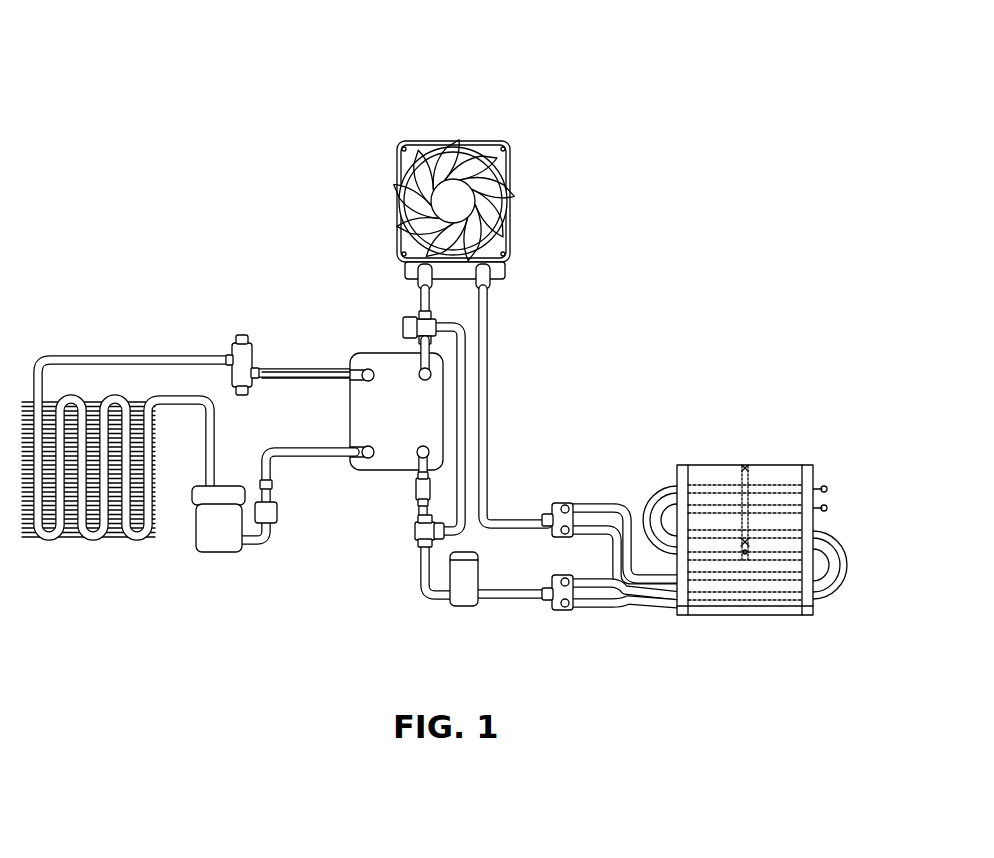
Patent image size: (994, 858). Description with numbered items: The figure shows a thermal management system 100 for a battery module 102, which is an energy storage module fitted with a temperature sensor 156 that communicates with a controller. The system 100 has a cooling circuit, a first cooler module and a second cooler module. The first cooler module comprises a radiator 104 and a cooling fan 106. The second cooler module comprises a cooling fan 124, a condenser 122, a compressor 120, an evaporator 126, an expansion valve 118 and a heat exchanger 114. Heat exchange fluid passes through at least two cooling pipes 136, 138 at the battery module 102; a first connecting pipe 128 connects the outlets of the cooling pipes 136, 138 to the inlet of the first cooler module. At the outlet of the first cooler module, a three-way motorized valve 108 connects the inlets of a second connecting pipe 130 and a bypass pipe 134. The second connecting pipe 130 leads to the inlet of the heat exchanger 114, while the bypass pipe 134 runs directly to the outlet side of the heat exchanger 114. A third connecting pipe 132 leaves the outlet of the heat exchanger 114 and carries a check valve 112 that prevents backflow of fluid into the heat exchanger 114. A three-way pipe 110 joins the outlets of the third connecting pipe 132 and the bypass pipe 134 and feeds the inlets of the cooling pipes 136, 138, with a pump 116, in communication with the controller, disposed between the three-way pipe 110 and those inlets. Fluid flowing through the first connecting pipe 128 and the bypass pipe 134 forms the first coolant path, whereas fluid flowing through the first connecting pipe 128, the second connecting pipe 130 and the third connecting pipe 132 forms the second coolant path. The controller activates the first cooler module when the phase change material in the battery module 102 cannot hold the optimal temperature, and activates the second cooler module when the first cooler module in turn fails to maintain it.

The thermal management system 100 is at (146, 38).
The battery module 102 is at (777, 465).
The radiator 104 is at (499, 176).
The cooling fan 106 is at (497, 205).
The three-way motorized valve 108 is at (412, 326).
The three-way pipe 110 is at (415, 533).
The check valve 112 is at (418, 489).
The heat exchanger 114 is at (349, 410).
The pump 116 is at (462, 606).
The expansion valve 118 is at (240, 335).
The compressor 120 is at (220, 552).
The condenser 122 is at (116, 540).
The cooling fan 124 is at (45, 538).
The evaporator 126 is at (293, 369).
The first connecting pipe 128 is at (487, 345).
The second connecting pipe 130 is at (420, 352).
The third connecting pipe 132 is at (432, 476).
The bypass pipe 134 is at (468, 385).
The cooling pipe 136 is at (628, 490).
The cooling pipe 138 is at (605, 522).
The temperature sensor 156 is at (745, 465).